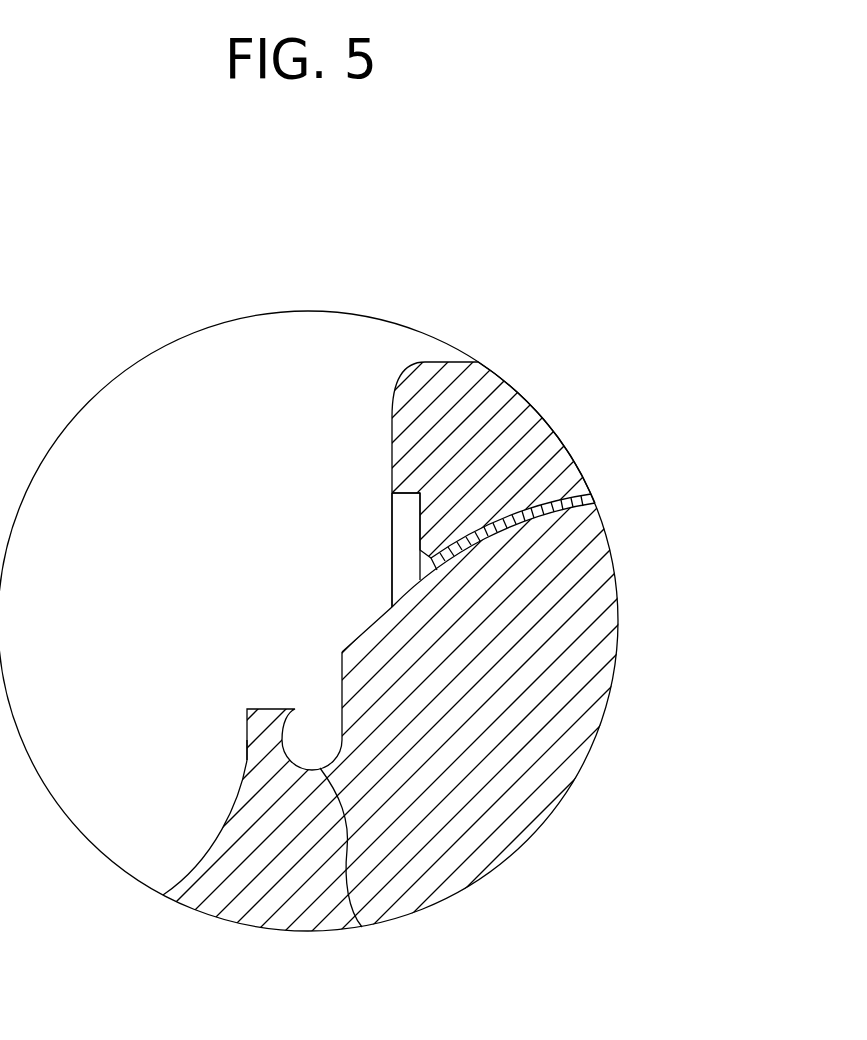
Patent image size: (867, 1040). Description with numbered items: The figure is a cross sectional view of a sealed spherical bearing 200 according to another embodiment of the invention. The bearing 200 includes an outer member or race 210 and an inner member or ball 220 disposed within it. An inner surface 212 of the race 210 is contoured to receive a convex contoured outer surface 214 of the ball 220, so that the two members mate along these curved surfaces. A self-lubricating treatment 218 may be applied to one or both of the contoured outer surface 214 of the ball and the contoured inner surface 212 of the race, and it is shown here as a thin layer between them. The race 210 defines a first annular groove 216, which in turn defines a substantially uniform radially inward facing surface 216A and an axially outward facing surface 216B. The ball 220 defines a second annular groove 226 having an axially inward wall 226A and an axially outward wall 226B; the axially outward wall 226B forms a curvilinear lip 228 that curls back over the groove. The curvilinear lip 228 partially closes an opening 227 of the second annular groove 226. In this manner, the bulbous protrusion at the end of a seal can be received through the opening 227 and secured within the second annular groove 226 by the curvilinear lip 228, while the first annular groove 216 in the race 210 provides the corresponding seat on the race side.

The spherical bearing 200 is at (523, 285).
The outer member or race 210 is at (480, 405).
The inner surface of the race 212 is at (618, 597).
The convex contoured outer surface of the ball 214 is at (617, 602).
The first annular groove 216 is at (365, 553).
The radially inward facing surface 216A is at (394, 497).
The axially outward facing surface 216B is at (420, 533).
The self-lubricating treatment 218 is at (592, 500).
The inner member or ball 220 is at (597, 673).
The second annular groove 226 is at (362, 927).
The axially inward wall 226A is at (342, 690).
The axially outward wall 226B is at (278, 760).
The opening of the second annular groove 227 is at (315, 730).
The curvilinear lip 228 is at (255, 708).